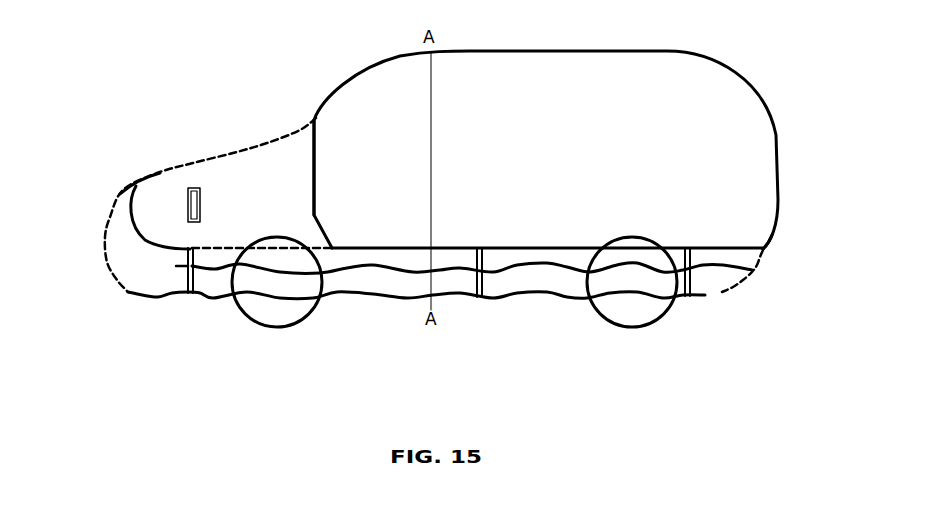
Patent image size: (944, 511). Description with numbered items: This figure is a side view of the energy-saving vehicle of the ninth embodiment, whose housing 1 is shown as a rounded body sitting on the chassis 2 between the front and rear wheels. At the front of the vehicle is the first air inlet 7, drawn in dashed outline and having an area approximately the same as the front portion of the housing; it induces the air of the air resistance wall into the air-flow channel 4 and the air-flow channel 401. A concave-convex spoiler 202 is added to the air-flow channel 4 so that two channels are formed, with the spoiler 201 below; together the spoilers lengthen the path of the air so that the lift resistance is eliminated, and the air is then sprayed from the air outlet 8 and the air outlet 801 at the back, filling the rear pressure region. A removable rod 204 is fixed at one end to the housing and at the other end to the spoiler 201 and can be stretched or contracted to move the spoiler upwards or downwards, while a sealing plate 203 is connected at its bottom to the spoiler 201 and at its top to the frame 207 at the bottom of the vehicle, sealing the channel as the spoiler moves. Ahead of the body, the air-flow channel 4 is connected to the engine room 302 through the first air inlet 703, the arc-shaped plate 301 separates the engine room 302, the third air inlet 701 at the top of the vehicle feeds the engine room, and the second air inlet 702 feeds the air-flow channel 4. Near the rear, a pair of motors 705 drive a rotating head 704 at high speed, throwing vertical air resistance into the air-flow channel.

The vehicle body 1 is at (543, 51).
The chassis frame 2 is at (397, 249).
The air-flow channel 4 is at (563, 280).
The first air inlet 7 is at (107, 212).
The air outlet 8 is at (743, 286).
The spoiler 201 is at (522, 295).
The concave-convex spoiler 202 is at (438, 267).
The sealing plate 203 is at (437, 288).
The removable rod 204 is at (693, 278).
The frame 207 is at (410, 282).
The arc-shaped plate 301 is at (313, 207).
The engine room 302 is at (267, 184).
The air-flow channel 401 is at (368, 256).
The third air inlet 701 is at (88, 106).
The second air inlet 702 is at (434, 283).
The decorative window 703 is at (194, 222).
The rotating head 704 is at (300, 249).
The motor 705 is at (755, 267).
The air outlet 801 is at (817, 272).